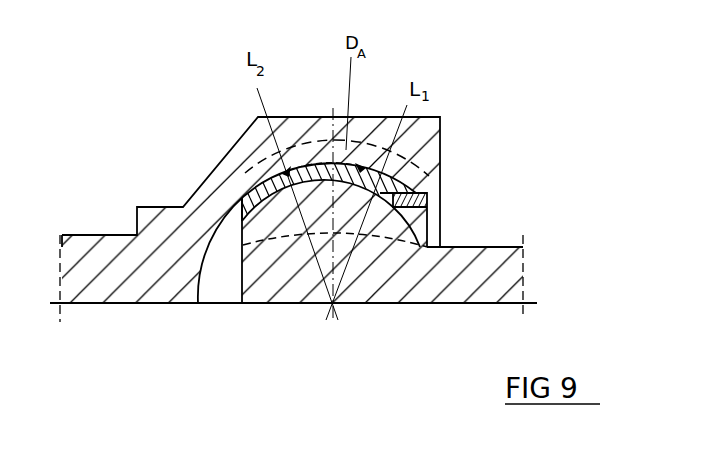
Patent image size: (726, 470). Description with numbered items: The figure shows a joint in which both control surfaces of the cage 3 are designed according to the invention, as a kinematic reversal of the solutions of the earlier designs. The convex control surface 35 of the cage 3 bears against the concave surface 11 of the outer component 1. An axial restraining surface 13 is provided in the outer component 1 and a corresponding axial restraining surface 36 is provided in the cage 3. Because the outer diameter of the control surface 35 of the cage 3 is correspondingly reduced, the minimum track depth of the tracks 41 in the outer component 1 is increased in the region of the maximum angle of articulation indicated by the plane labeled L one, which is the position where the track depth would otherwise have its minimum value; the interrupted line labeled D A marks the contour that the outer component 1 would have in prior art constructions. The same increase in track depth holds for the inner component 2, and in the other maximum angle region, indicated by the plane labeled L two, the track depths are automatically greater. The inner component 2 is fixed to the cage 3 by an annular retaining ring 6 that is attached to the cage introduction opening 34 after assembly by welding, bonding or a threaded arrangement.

The outer component 1 is at (213, 208).
The inner component 2 is at (483, 271).
The cage 3 is at (405, 185).
The annular retaining ring 6 is at (402, 202).
The concave surface 11 is at (360, 160).
The axial restraining surface 13 is at (229, 231).
The cage introduction opening 34 is at (387, 242).
The convex control surface 35 is at (412, 168).
The axial restraining surface 36 is at (258, 168).
The tracks 41 is at (294, 172).